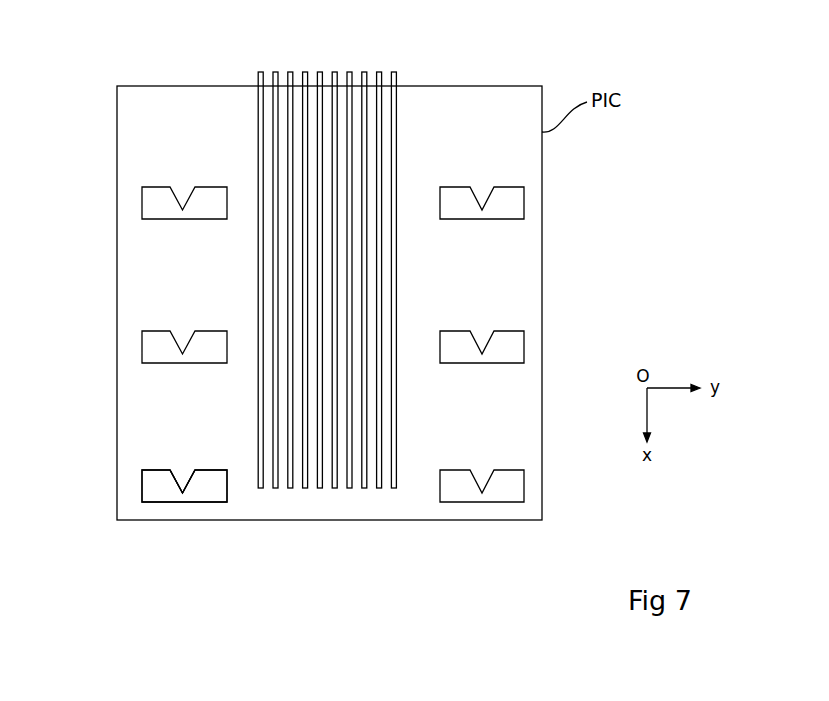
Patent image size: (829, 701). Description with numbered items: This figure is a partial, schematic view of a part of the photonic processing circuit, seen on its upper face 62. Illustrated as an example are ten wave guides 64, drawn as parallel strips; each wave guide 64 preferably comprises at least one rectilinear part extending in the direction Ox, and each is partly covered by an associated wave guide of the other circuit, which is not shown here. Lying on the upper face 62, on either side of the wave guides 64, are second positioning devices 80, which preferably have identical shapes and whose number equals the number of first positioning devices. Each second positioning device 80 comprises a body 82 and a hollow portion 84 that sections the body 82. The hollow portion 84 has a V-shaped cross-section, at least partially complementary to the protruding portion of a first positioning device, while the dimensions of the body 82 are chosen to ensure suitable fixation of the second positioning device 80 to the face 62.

The upper face 62 is at (470, 420).
The wave guide 64 is at (396, 82).
The second positioning device 80 is at (158, 205).
The body 82 is at (160, 492).
The hollow portion 84 is at (183, 477).